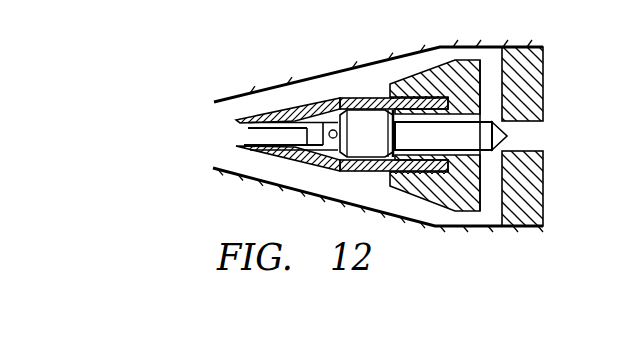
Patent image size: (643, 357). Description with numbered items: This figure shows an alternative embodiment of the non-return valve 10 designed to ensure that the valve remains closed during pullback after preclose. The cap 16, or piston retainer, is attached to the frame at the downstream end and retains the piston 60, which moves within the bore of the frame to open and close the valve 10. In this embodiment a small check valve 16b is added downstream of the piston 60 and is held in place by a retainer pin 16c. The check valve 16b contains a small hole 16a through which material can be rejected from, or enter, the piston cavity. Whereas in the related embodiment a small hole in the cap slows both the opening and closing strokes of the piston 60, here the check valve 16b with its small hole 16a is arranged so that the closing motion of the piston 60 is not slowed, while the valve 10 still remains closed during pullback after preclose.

The non-return valve 10 is at (266, 96).
The cap 16 is at (281, 141).
The small hole 16a is at (288, 158).
The small check valve 16b is at (258, 128).
The retainer pin 16c is at (327, 127).
The piston 60 is at (380, 148).